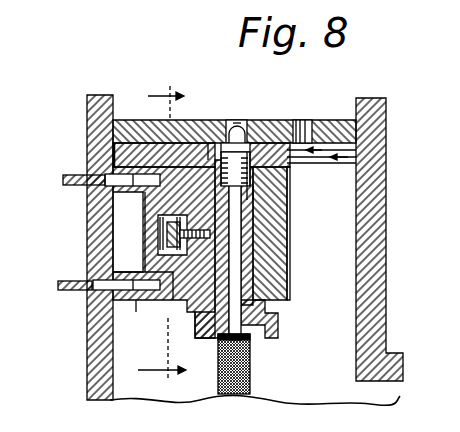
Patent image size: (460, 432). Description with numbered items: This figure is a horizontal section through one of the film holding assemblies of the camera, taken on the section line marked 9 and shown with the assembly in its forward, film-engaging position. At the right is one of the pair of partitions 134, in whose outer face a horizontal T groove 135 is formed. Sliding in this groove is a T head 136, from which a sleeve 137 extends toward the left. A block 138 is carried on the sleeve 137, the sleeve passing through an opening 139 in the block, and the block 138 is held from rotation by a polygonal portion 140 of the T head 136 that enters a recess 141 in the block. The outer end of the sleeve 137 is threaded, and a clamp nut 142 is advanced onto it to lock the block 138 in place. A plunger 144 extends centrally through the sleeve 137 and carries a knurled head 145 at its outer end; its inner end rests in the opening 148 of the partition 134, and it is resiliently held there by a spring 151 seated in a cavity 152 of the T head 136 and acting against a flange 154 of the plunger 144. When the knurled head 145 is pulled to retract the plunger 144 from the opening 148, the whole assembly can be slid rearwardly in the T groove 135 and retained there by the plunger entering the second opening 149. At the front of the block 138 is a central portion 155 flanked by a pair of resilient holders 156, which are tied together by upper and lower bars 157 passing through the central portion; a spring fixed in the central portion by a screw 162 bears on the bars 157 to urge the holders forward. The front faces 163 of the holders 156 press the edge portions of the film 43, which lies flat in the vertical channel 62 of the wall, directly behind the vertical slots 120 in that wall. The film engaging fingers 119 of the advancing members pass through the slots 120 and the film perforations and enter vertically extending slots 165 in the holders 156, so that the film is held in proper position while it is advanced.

The section line 9- 9 is at (162, 236).
The film 43 is at (64, 180).
The vertical channel 62 is at (145, 258).
The film engaging fingers 119 is at (112, 155).
The vertical slot 120 is at (100, 297).
The partition 134 is at (376, 98).
The T groove 135 is at (357, 148).
The T head 136 is at (210, 148).
The sleeve 137 is at (288, 211).
The block 138 is at (275, 257).
The opening 139 is at (289, 228).
The polygonal portion 140 is at (288, 188).
The recess 141 is at (305, 131).
The clamp nut 142 is at (277, 324).
The plunger 144 is at (236, 274).
The knurled head 145 is at (250, 374).
The opening 148 is at (245, 134).
The opening 149 is at (343, 125).
The spring 151 is at (236, 123).
The cavity 152 is at (258, 196).
The flange 154 is at (250, 153).
The central portion 155 is at (157, 253).
The resilient holder 156 is at (120, 166).
The bar 157 is at (160, 230).
The screw 162 is at (150, 243).
The front face 163 is at (95, 273).
The vertically extending slot 165 is at (92, 324).